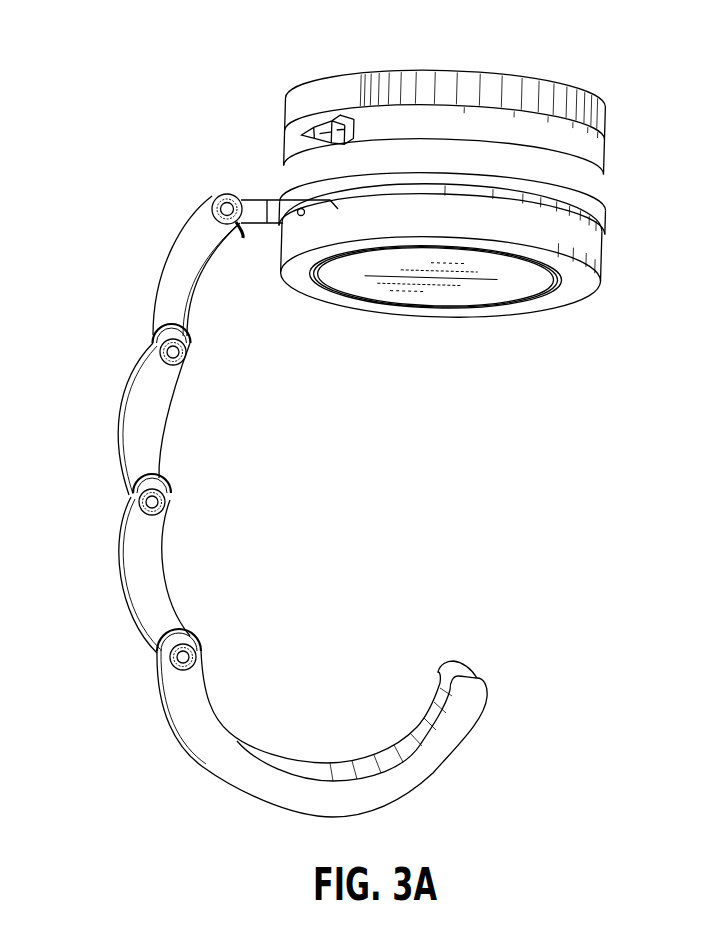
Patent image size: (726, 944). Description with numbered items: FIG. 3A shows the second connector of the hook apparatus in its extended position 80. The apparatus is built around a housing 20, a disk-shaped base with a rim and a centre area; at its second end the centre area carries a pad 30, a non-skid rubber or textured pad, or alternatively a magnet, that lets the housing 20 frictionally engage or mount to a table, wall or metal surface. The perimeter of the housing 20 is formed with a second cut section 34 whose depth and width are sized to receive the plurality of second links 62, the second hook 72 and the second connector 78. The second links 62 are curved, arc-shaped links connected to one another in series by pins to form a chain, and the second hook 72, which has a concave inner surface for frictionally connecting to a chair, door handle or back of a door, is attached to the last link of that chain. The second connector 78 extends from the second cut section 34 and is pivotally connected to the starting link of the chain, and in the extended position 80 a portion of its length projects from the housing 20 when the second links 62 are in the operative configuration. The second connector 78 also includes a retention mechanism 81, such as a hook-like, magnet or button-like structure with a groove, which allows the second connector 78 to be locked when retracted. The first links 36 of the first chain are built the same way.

The housing 20 is at (585, 278).
The pad 30 is at (450, 305).
The second cut section 34 is at (557, 208).
The plurality of first links 36 is at (428, 118).
The plurality of second links 62 is at (150, 420).
The second hook 72 is at (423, 762).
The second connector 78 is at (259, 224).
The extended position 80 is at (228, 194).
The retention mechanism 81 is at (299, 208).